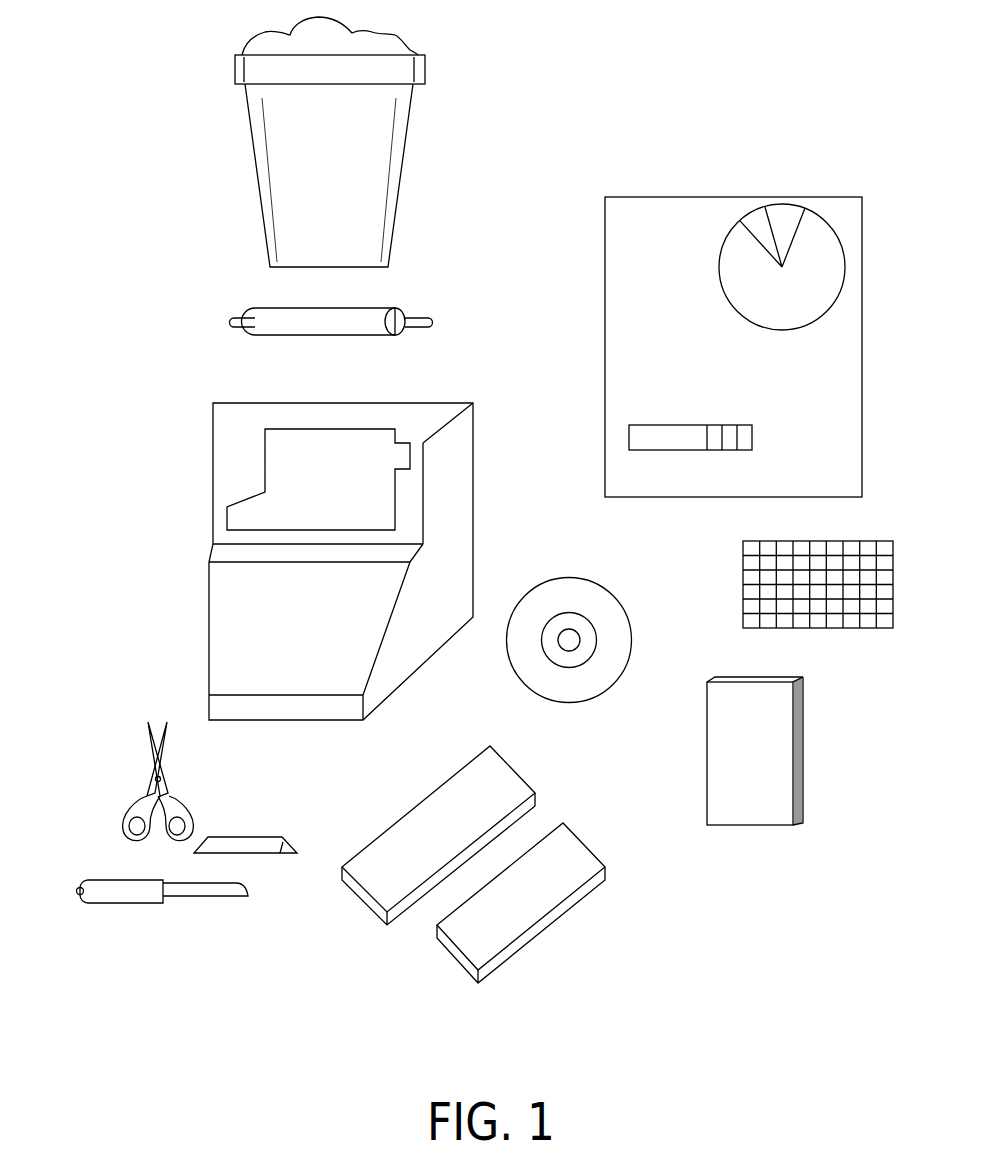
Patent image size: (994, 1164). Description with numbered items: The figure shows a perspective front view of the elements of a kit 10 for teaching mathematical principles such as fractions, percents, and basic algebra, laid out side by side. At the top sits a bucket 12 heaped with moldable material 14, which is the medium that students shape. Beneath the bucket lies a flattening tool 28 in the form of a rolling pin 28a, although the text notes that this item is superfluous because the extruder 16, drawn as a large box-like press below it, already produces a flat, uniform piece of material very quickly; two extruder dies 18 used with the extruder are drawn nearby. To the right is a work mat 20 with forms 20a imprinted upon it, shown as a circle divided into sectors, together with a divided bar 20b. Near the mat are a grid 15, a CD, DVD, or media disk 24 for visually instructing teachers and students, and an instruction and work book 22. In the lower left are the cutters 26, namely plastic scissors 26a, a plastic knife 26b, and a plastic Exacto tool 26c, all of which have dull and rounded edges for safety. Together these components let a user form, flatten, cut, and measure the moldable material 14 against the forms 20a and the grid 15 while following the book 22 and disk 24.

The kit 10 is at (706, 60).
The bucket 12 is at (340, 167).
The moldable material 14 is at (378, 38).
The grid 15 is at (852, 628).
The extruder 16 is at (207, 462).
The extruder dies 18 is at (520, 767).
The work mat 20 is at (765, 367).
The forms 20a is at (838, 237).
The bar chart 20b is at (663, 442).
The instruction and work book 22 is at (745, 815).
The media disk 24 is at (620, 637).
The cutters 26 is at (188, 838).
The plastic scissors 26a is at (168, 782).
The plastic knives 26b is at (130, 903).
The plastic Exacto tool 26c is at (255, 837).
The flattening tool 28 is at (320, 299).
The rolling pin 28a is at (395, 310).